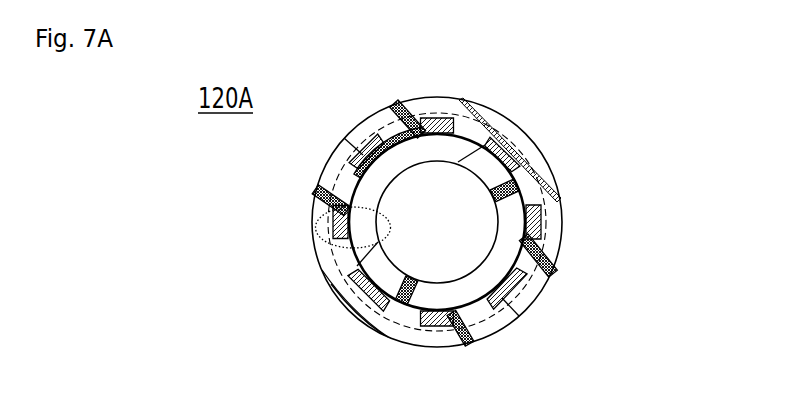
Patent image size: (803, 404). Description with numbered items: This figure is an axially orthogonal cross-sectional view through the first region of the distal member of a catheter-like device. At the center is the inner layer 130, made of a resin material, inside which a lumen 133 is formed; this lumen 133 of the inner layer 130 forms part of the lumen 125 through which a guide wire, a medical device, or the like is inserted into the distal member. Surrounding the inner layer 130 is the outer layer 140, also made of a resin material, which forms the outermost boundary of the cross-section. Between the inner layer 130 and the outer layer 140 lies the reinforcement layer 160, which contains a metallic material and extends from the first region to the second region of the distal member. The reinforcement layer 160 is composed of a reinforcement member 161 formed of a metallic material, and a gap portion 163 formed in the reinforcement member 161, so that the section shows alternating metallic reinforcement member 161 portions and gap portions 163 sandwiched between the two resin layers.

The outer layer 140 is at (526, 139).
The inner layer 130 is at (528, 267).
The reinforcement layer 160 is at (662, 178).
The reinforcement member 161 is at (541, 220).
The gap portion 163 is at (562, 188).
The lumen 133 is at (279, 233).
The lumen 125 is at (317, 223).